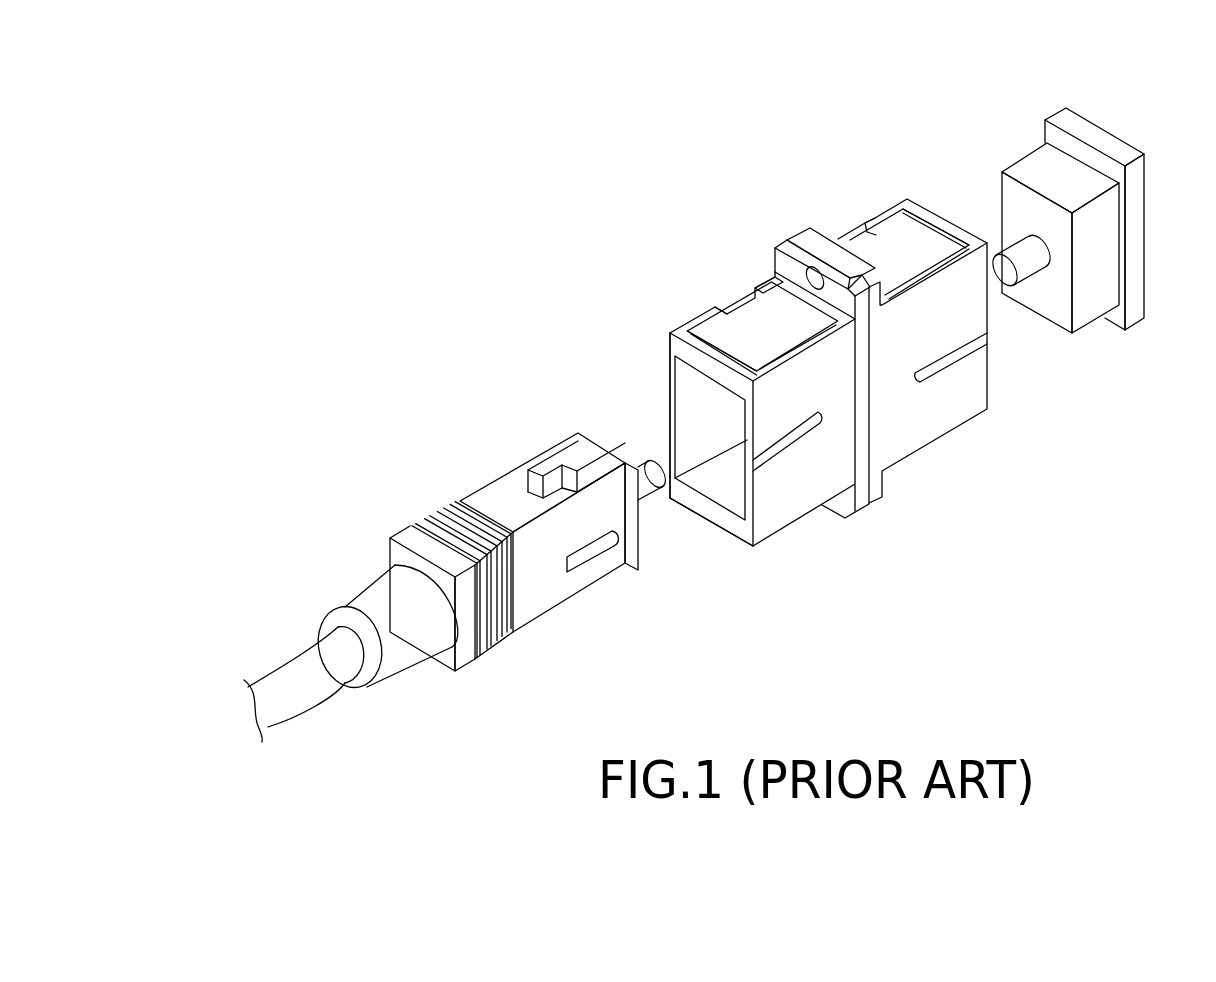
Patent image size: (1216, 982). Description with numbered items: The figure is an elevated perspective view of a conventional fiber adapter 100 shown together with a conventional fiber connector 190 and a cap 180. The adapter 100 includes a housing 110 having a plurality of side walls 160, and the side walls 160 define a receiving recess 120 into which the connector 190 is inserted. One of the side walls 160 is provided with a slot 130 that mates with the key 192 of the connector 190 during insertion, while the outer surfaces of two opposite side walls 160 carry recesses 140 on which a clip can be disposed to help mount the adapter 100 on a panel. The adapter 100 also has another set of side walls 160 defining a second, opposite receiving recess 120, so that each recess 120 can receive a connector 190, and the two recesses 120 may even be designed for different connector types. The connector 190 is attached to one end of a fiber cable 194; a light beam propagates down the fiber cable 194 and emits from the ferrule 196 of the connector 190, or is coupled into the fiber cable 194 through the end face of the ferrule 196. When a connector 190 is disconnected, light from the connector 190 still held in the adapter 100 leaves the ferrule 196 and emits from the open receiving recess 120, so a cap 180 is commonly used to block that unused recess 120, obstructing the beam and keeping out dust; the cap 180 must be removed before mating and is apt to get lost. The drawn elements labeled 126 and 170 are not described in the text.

The fiber adapter 100 is at (736, 150).
The housing 110 is at (665, 303).
The receiving recess 120 is at (728, 467).
The housing side wall 126 is at (676, 348).
The slot 130 is at (950, 345).
The recess 140 is at (882, 250).
The side wall 160 is at (950, 215).
The key tab 170 is at (729, 294).
The cap 180 is at (1130, 125).
The connector 190 is at (423, 466).
The key 192 is at (595, 560).
The fiber cable 194 is at (308, 665).
The ferrule 196 is at (668, 447).